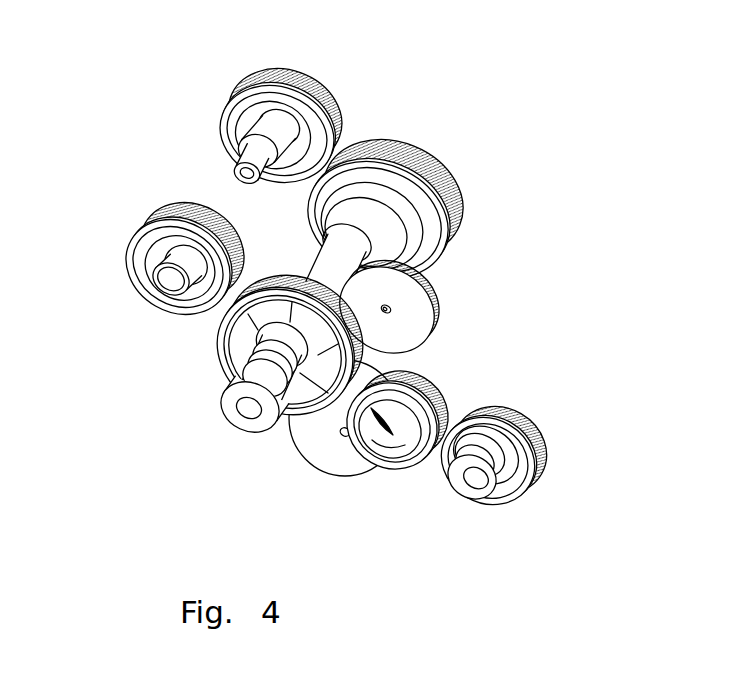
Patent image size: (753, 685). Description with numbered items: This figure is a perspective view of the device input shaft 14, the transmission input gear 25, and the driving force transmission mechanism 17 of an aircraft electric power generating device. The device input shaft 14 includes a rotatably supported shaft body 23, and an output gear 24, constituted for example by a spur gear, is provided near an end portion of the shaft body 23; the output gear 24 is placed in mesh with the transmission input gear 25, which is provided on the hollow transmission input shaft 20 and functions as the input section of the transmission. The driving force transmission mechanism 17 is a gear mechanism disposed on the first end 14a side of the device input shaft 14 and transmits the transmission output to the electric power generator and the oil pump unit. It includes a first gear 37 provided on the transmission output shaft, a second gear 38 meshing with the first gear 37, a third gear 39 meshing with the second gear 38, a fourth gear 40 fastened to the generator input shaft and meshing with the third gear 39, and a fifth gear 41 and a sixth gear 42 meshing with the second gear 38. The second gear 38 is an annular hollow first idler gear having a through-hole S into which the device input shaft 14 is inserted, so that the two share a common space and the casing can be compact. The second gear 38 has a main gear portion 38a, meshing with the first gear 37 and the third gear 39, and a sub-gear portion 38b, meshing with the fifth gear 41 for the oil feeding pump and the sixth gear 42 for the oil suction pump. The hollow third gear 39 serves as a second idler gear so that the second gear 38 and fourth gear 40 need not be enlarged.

The device input shaft 14 is at (226, 404).
The first end 14a is at (227, 402).
The driving force transmission mechanism 17 is at (344, 296).
The transmission input shaft 20 is at (238, 160).
The shaft body 23 is at (356, 252).
The output gear 24 is at (410, 181).
The transmission input gear 25 is at (254, 101).
The first gear 37 is at (126, 270).
The second gear 38 is at (310, 371).
The main gear portion 38a is at (368, 365).
The sub-gear portion 38b is at (287, 275).
The third gear 39 is at (428, 478).
The fourth gear 40 is at (523, 511).
The fifth gear 41 is at (437, 313).
The sixth gear 42 is at (348, 463).
The through-hole S is at (316, 398).